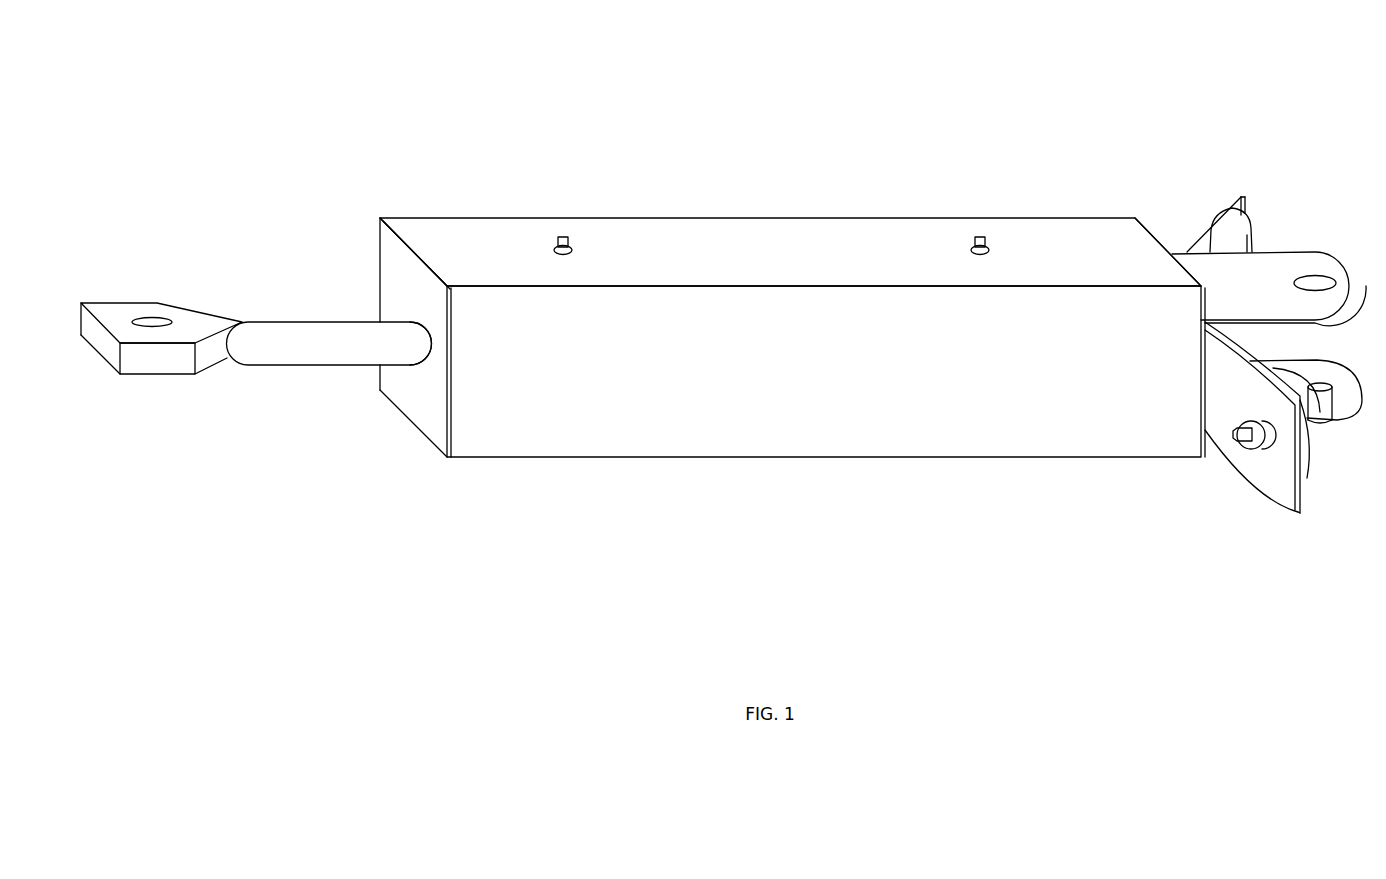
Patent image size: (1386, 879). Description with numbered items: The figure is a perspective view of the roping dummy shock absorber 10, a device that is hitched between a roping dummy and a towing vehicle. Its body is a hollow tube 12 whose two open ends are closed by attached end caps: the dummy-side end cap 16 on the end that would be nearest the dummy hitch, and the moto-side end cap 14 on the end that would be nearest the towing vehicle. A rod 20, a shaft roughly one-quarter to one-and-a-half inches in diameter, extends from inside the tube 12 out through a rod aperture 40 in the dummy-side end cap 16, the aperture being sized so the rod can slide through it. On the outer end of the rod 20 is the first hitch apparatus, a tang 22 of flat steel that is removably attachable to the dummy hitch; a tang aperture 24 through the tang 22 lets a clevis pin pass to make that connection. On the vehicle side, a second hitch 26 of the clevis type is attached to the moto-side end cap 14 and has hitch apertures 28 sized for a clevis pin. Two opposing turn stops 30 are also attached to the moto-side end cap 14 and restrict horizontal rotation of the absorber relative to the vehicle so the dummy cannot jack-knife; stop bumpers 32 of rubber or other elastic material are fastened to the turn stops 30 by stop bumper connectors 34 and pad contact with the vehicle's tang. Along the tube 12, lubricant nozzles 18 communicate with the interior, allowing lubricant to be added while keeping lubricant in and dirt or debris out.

The roping dummy shock absorber 10 is at (660, 175).
The hollow tube 12 is at (1051, 218).
The moto-side end cap 14 is at (1144, 226).
The dummy-side end cap 16 is at (400, 237).
The lubricant nozzles 18 is at (562, 237).
The rod 20 is at (288, 322).
The tang 22 is at (187, 308).
The tang aperture 24 is at (151, 318).
The second hitch 26 is at (1285, 252).
The hitch apertures 28 is at (1313, 276).
The turn stops 30 is at (1197, 232).
The stop bumpers 32 is at (1238, 195).
The stop bumper connectors 34 is at (1255, 452).
The rod aperture 40 is at (431, 322).